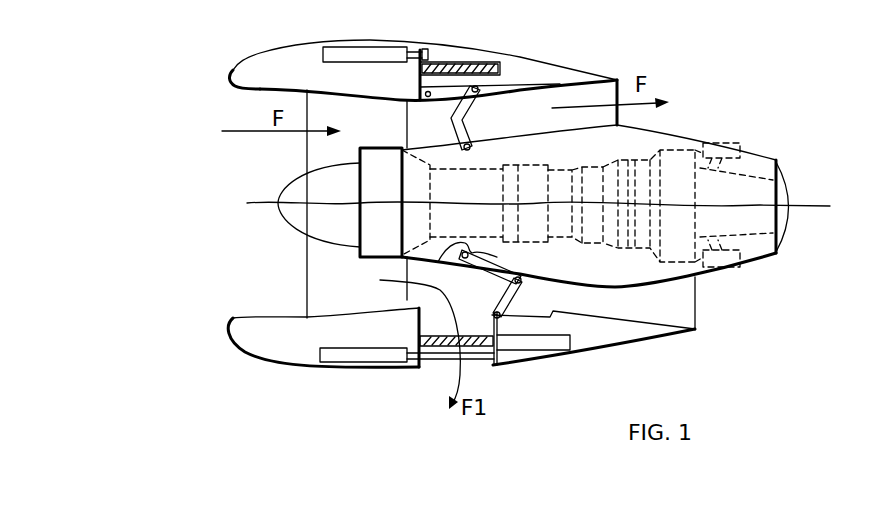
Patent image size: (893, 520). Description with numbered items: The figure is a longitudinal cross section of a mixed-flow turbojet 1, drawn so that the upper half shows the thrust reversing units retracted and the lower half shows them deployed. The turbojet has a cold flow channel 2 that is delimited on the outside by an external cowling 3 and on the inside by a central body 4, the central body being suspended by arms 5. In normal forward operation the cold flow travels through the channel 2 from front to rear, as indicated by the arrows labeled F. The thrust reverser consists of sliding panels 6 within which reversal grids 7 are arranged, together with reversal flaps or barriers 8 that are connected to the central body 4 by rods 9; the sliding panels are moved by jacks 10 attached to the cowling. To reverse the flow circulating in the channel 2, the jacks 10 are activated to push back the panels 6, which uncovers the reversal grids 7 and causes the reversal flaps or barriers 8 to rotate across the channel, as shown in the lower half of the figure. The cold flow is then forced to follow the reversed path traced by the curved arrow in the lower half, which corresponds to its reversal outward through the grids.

The turbojet 1 is at (507, 43).
The cold flow channel 2 is at (420, 116).
The external cowling 3 is at (253, 63).
The central body 4 is at (672, 132).
The arms 5 is at (327, 101).
The sliding panels 6 is at (542, 70).
The reversal grids 7 is at (477, 60).
The reversal flaps or barriers 8 is at (447, 90).
The rods 9 is at (467, 118).
The jacks 10 is at (340, 53).